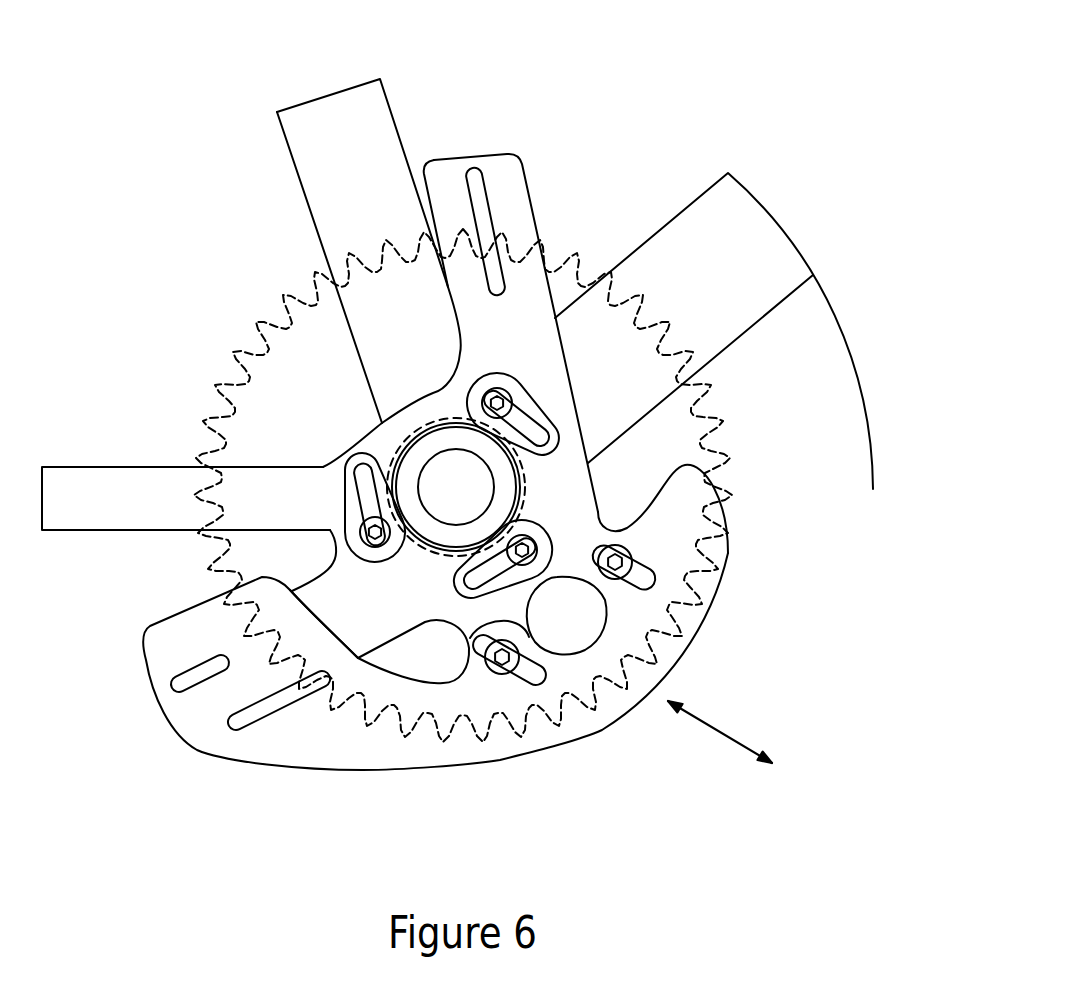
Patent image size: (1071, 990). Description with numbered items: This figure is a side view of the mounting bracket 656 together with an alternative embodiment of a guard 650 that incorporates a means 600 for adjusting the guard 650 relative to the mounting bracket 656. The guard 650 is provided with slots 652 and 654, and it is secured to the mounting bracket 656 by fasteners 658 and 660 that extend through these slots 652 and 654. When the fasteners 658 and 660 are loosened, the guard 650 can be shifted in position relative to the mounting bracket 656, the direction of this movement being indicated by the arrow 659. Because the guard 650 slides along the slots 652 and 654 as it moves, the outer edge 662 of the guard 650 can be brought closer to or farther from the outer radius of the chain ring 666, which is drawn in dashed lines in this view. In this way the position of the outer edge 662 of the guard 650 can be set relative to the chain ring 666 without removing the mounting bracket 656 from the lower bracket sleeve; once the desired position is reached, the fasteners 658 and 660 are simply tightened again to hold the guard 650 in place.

The means for adjusting the guard 600 is at (558, 608).
The guard 650 is at (683, 637).
The slot 652 is at (525, 683).
The slot 654 is at (708, 566).
The mounting bracket 656 is at (517, 197).
The fastener 658 is at (488, 670).
The arrow 659 is at (718, 733).
The fastener 660 is at (627, 553).
The outer edge 662 is at (198, 749).
The chain ring 666 is at (227, 358).